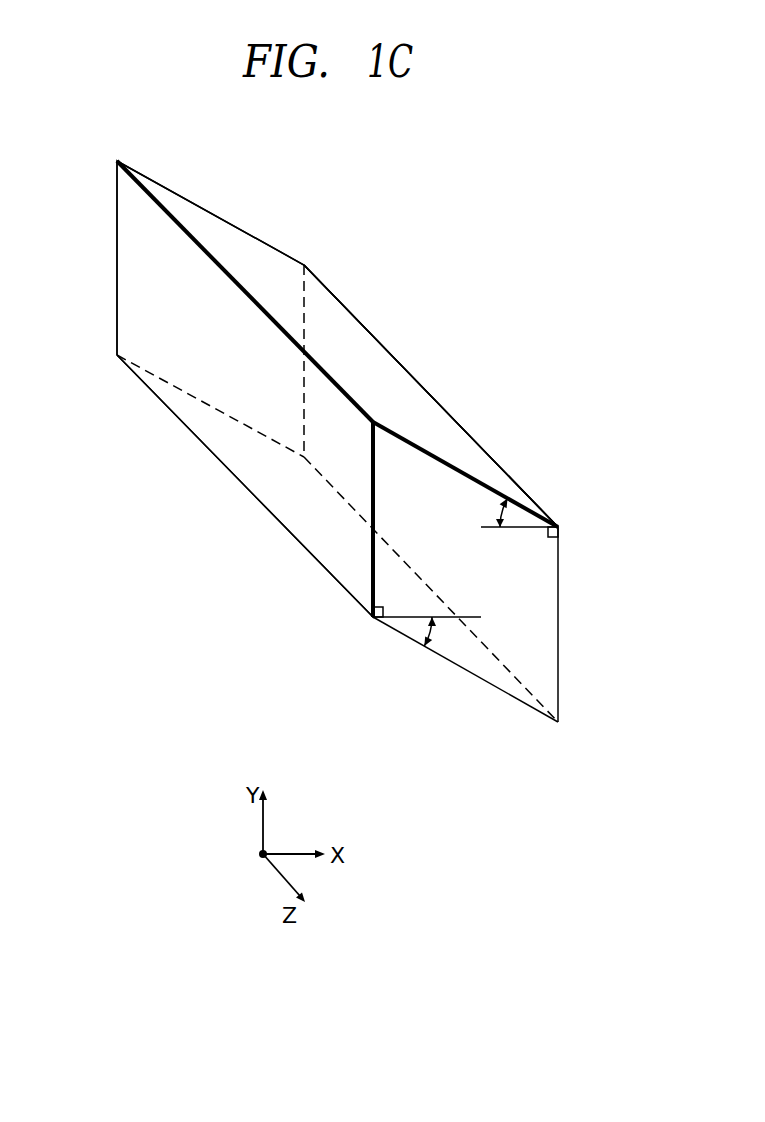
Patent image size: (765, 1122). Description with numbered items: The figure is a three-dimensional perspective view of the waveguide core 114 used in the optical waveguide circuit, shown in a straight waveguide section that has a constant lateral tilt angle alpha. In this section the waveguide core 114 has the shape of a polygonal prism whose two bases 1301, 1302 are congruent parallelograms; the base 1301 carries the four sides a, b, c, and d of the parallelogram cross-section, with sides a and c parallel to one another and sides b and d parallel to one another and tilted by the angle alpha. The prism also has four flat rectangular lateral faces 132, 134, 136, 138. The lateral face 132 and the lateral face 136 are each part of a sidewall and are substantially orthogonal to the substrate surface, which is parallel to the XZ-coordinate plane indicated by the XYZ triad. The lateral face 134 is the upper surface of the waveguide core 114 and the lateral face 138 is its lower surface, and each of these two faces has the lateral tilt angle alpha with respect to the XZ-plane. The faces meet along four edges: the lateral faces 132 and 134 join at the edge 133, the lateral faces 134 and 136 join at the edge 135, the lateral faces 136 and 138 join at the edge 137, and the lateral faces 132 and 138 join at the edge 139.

The waveguide core 114 is at (343, 121).
The base 1301 is at (548, 663).
The base 1302 is at (238, 252).
The lateral face 132 is at (136, 273).
The edge 133 is at (158, 204).
The lateral face 134 is at (343, 333).
The edge 135 is at (487, 452).
The lateral face 136 is at (398, 397).
The edge 137 is at (478, 641).
The lateral face 138 is at (257, 472).
The edge 139 is at (168, 410).